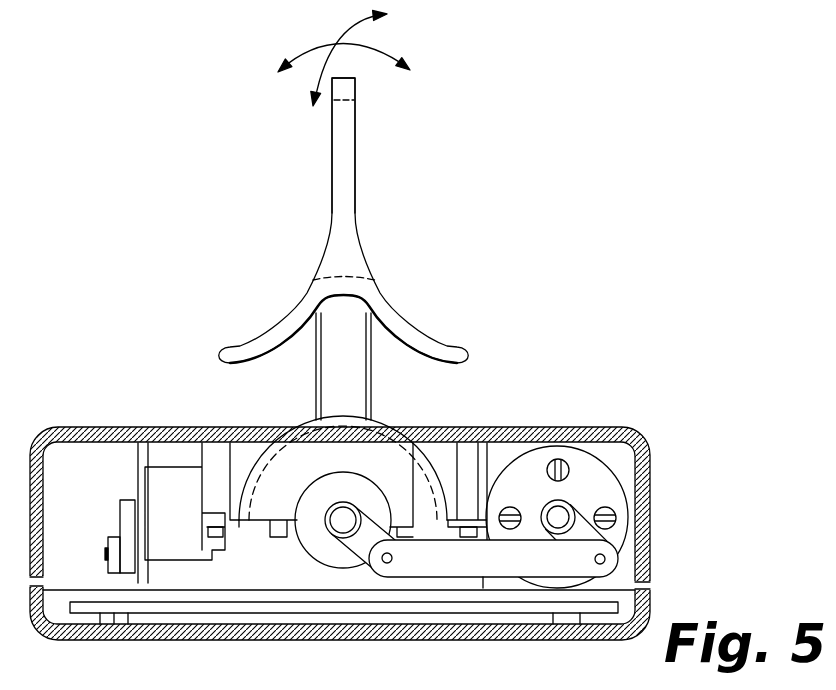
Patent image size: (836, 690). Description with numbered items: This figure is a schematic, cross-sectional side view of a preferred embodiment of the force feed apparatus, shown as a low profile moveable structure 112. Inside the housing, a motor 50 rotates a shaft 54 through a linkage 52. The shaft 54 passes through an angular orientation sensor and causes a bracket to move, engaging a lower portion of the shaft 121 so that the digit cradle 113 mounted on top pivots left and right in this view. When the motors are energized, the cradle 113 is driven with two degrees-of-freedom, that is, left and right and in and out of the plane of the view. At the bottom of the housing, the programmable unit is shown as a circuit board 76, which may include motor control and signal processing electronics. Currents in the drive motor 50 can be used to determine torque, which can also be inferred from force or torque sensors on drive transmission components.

The motor 50 is at (598, 473).
The linkage 52 is at (545, 562).
The shaft 54 is at (349, 516).
The circuit board 76 is at (158, 603).
The low profile moveable structure 112 is at (526, 326).
The digit cradle 113 is at (357, 108).
The shaft 121 is at (316, 362).